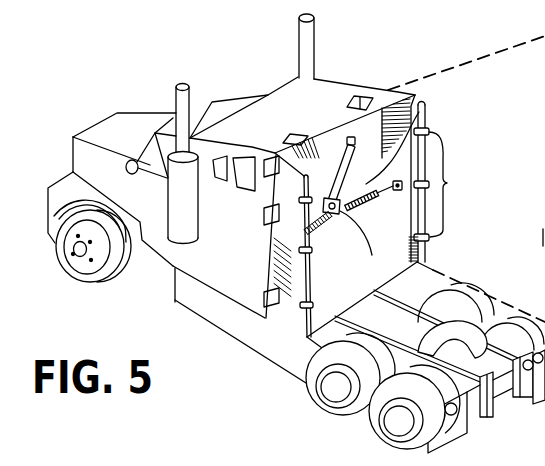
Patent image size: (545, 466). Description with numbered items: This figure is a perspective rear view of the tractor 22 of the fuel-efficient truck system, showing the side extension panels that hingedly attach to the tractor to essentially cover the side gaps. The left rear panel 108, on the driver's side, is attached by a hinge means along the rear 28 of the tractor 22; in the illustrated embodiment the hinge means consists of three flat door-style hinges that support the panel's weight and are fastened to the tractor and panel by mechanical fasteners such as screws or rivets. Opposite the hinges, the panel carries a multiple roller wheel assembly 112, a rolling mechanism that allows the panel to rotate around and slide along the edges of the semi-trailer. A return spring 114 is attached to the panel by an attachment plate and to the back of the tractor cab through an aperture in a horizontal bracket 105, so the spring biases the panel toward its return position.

The tractor 22 is at (128, 283).
The rear of the tractor 28 is at (368, 92).
The horizontal bracket 105 is at (429, 254).
The left rear panel 108 is at (288, 300).
The multiple roller wheel assembly 112 is at (447, 183).
The return spring 114 is at (420, 108).